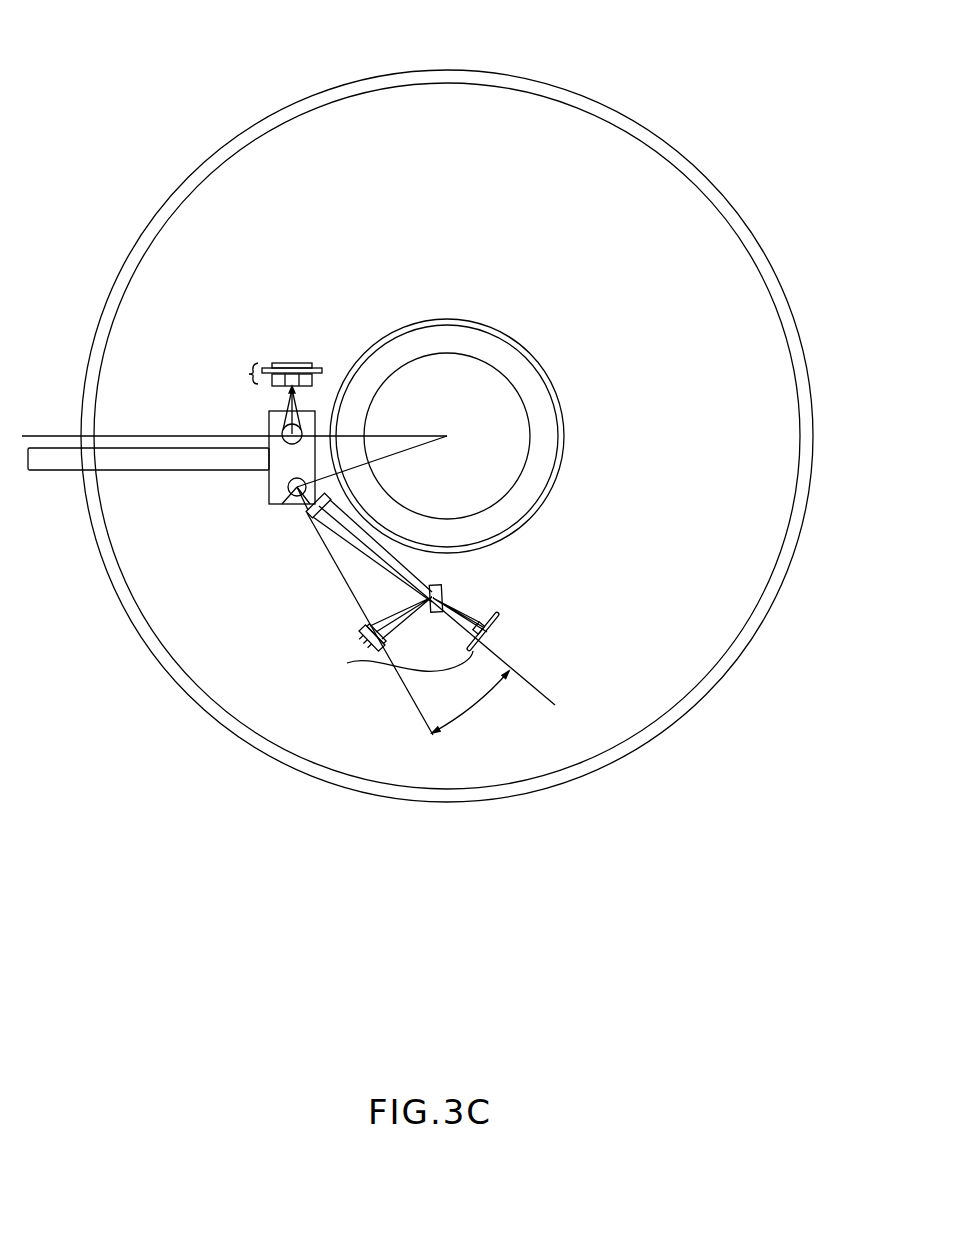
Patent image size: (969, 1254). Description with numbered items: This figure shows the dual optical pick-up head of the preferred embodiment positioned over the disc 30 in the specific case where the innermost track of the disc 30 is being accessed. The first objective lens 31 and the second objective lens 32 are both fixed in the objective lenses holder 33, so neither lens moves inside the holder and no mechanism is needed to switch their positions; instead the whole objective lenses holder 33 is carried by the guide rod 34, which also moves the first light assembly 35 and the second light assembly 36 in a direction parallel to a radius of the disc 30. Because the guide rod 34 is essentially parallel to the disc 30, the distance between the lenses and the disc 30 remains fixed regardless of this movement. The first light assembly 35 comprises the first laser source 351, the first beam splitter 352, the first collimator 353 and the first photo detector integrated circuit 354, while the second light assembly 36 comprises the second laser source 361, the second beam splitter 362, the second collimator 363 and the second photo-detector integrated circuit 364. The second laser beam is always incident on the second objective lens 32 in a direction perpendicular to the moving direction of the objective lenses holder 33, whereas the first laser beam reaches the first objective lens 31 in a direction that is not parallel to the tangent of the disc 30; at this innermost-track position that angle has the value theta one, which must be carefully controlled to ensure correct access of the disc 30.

The disc 30 is at (716, 186).
The first objective lens 31 is at (305, 508).
The second objective lens 32 is at (283, 430).
The objective lenses holder 33 is at (280, 458).
The guide rod 34 is at (107, 455).
The first light assembly 35 is at (350, 662).
The second light assembly 36 is at (229, 202).
The first laser source 351 is at (367, 660).
The first beam splitter 352 is at (443, 587).
The first collimator 353 is at (300, 516).
The first photo detector integrated circuit 354 is at (500, 628).
The second laser source 361 is at (325, 372).
The second beam splitter 362 is at (327, 378).
The second collimator 363 is at (250, 377).
The second photo-detector integrated circuit 364 is at (322, 364).